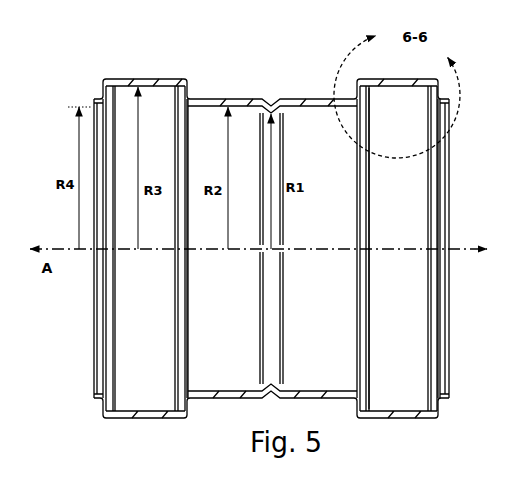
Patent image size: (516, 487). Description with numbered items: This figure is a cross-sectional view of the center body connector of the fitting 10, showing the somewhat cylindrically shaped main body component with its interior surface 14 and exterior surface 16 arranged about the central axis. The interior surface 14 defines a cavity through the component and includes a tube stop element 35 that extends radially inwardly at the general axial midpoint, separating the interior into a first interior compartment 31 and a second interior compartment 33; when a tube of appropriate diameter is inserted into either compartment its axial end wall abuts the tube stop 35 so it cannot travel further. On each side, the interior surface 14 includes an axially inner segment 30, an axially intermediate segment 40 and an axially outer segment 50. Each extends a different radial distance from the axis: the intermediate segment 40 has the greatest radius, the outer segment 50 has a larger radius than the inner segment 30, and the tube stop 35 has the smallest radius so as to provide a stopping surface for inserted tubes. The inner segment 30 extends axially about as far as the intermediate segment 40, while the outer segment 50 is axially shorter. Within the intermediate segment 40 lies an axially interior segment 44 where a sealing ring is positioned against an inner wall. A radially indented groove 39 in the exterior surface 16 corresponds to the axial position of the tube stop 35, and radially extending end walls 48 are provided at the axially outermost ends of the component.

The fitting 10 is at (449, 399).
The interior surface 14 is at (401, 311).
The exterior surface 16 is at (218, 97).
The axially inner segment 30 is at (205, 386).
The first interior compartment 31 is at (126, 323).
The second interior compartment 33 is at (421, 184).
The tube stop element 35 is at (271, 382).
The radially indented groove 39 is at (272, 100).
The axially intermediate segment 40 is at (142, 404).
The axially interior segment 44 is at (371, 391).
The radially extending end walls 48 is at (95, 398).
The axially outer segment 50 is at (445, 380).